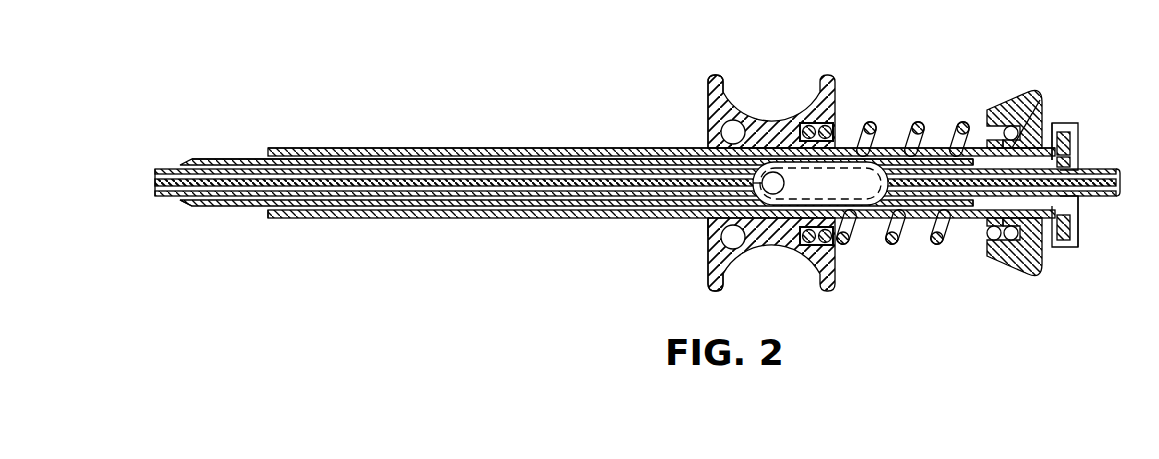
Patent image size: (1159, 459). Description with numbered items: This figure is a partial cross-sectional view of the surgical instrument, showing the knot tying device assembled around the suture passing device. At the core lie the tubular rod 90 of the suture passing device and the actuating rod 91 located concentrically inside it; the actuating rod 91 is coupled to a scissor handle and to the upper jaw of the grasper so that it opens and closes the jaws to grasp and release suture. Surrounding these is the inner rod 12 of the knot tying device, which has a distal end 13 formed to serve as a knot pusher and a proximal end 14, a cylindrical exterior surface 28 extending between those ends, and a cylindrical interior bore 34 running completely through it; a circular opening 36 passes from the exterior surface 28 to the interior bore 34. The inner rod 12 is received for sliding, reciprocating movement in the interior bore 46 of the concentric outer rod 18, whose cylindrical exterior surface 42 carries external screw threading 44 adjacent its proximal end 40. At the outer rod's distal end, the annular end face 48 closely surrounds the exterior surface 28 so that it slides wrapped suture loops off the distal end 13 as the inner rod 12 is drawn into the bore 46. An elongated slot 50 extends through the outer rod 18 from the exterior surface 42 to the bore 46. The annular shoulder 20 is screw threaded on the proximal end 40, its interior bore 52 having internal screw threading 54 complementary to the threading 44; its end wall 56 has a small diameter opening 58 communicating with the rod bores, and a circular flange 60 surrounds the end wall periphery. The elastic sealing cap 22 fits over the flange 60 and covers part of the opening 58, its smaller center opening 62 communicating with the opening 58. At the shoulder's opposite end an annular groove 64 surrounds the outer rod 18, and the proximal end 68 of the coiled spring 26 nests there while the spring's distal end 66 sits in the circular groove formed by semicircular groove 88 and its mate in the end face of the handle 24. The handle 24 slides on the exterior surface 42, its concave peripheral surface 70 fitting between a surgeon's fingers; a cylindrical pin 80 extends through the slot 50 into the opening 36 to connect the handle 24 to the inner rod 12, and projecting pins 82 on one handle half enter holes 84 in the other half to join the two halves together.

The inner rod 12 is at (243, 159).
The distal end 13 is at (190, 207).
The proximal end 14 is at (974, 212).
The outer rod 18 is at (543, 148).
The annular shoulder 20 is at (1018, 107).
The sealing cap 22 is at (1078, 134).
The handle 24 is at (840, 52).
The spring 26 is at (871, 121).
The exterior surface 28 is at (215, 158).
The interior bore 34 is at (470, 169).
The circular opening 36 is at (784, 183).
The proximal end 40 is at (1032, 266).
The exterior surface 42 is at (380, 219).
The external screw threading 44 is at (1050, 256).
The interior bore 46 is at (378, 148).
The annular end face 48 is at (268, 218).
The elongated slot 50 is at (832, 192).
The interior bore 52 is at (1052, 128).
The internal screw threading 54 is at (1034, 128).
The end wall 56 is at (1070, 140).
The end wall opening 58 is at (1070, 160).
The circular flange 60 is at (1068, 247).
The center opening 62 is at (1080, 205).
The annular groove 64 is at (1002, 130).
The distal end 66 is at (810, 124).
The proximal end 68 is at (990, 248).
The peripheral surface 70 is at (805, 262).
The cylindrical pin 80 is at (712, 224).
The projecting pins 82 is at (710, 125).
The holes 84 is at (738, 121).
The semicircular groove 88 is at (833, 243).
The tubular rod 90 is at (176, 166).
The actuating rod 91 is at (156, 185).